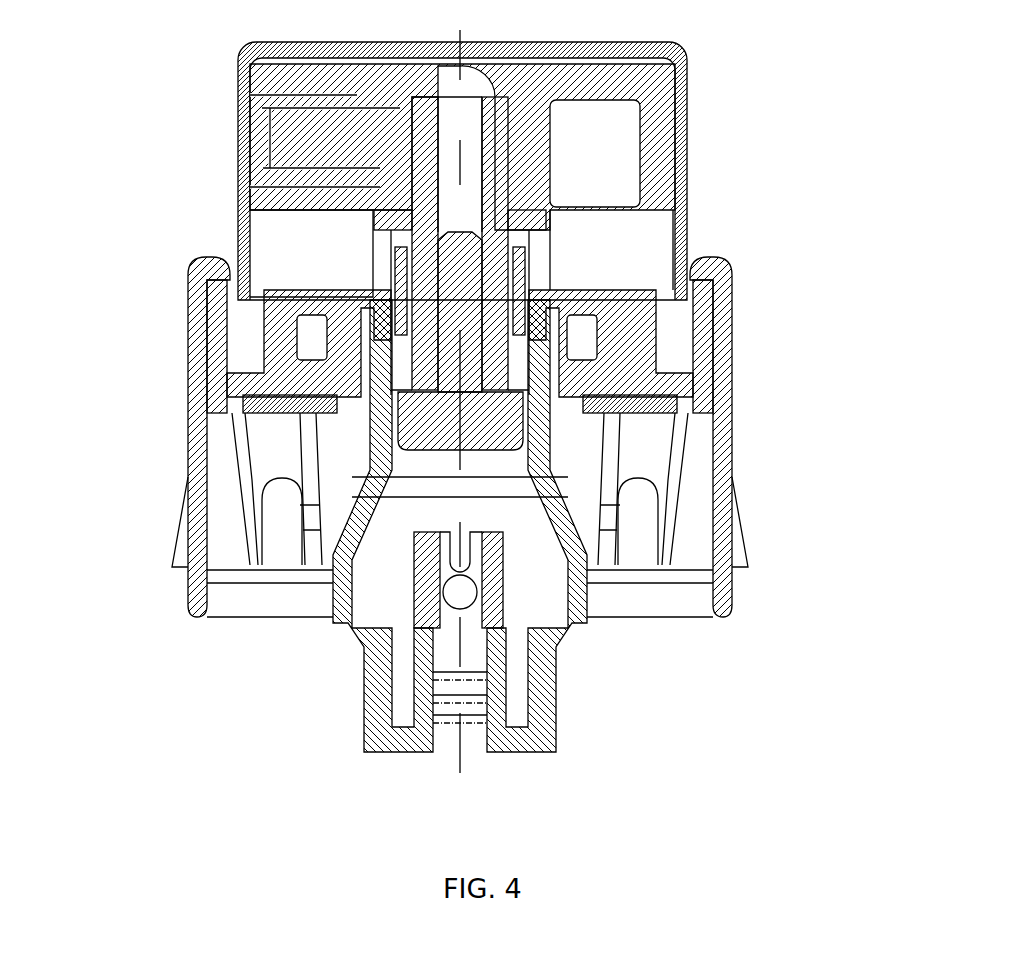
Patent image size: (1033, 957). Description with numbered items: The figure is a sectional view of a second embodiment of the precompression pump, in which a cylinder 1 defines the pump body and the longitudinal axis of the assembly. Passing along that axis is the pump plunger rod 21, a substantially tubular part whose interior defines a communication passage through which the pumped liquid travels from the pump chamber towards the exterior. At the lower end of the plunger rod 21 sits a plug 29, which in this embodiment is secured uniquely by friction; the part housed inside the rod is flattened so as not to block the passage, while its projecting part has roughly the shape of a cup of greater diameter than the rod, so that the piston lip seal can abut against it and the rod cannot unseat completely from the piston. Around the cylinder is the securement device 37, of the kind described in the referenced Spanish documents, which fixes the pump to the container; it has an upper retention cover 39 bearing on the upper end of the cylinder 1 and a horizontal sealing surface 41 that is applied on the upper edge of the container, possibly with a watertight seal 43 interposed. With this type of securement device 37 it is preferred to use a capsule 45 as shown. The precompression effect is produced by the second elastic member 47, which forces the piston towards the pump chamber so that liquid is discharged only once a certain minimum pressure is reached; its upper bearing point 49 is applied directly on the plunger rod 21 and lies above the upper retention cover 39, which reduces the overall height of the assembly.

The cylinder 1 is at (593, 620).
The pump plunger rod 21 is at (507, 185).
The plug 29 is at (467, 393).
The securement device 37 is at (700, 380).
The upper retention cover 39 is at (617, 293).
The horizontal sealing surface 41 is at (237, 370).
The watertight seal 43 is at (290, 408).
The capsule 45 is at (187, 582).
The second elastic member 47 is at (240, 293).
The upper bearing point 49 is at (383, 220).